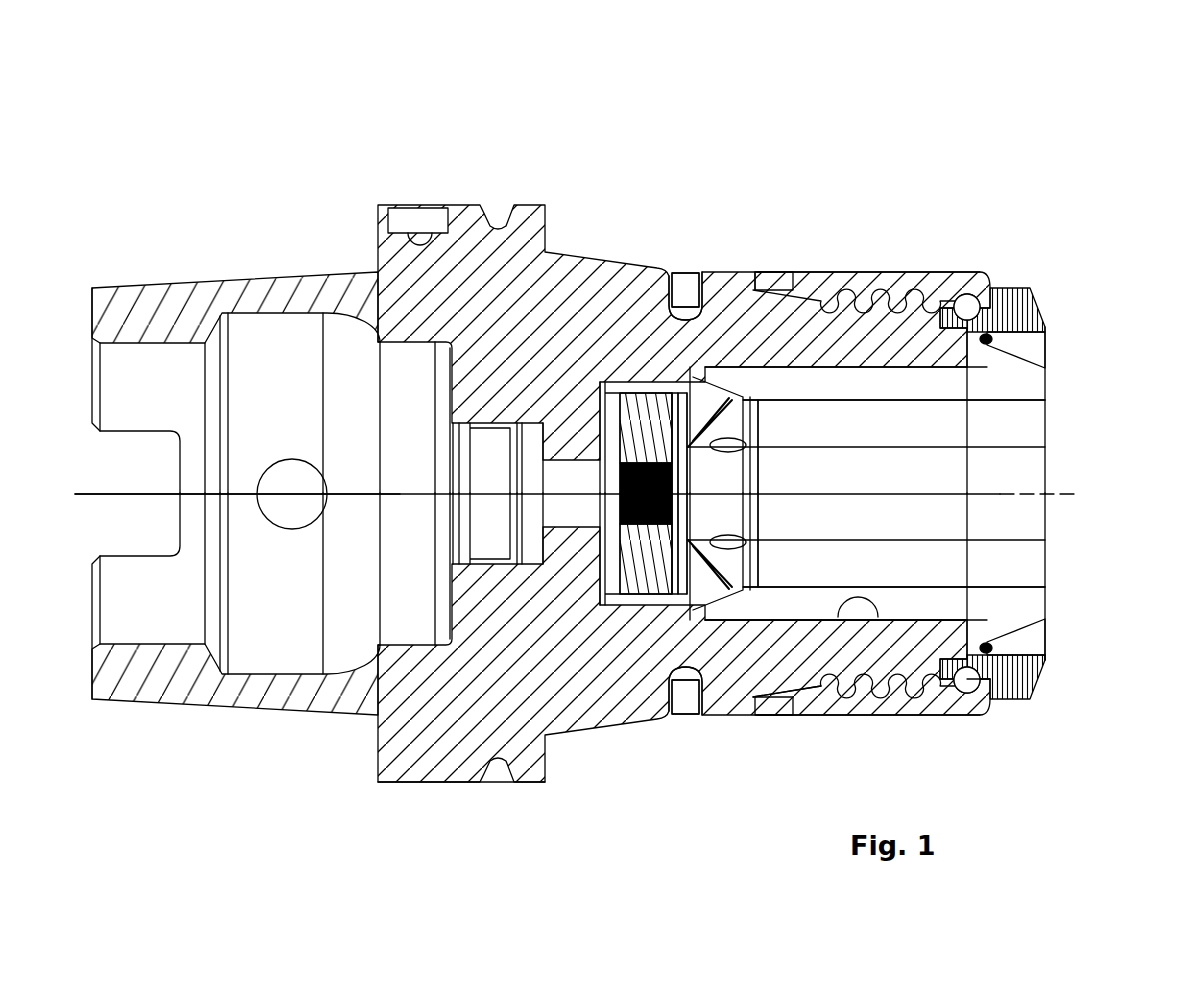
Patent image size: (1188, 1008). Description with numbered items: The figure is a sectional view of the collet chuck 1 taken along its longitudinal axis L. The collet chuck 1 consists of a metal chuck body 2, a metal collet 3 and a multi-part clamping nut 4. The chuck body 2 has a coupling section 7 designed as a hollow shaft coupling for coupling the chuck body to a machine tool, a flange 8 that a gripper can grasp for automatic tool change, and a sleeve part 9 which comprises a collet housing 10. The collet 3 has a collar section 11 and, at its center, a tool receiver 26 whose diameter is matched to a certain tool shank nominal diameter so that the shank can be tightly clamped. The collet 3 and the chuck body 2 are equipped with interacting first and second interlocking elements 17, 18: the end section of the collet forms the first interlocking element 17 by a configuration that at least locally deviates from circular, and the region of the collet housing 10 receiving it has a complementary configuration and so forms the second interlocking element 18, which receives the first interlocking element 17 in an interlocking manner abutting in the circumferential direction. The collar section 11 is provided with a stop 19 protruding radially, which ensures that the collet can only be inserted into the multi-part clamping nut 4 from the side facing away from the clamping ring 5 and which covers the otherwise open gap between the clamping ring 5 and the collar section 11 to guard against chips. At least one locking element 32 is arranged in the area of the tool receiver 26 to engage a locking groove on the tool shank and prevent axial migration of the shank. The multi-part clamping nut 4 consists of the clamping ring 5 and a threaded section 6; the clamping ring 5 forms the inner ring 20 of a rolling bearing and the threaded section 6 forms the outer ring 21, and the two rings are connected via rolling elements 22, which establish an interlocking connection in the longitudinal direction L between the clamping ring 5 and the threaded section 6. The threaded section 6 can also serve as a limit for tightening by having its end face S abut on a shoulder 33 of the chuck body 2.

The collet chuck 1 is at (727, 223).
The chuck body 2 is at (558, 300).
The collet 3 is at (807, 385).
The multi-part clamping nut 4 is at (1007, 276).
The clamping ring 5 is at (1005, 318).
The threaded section 6 is at (870, 272).
The coupling section 7 is at (197, 303).
The flange 8 is at (478, 780).
The sleeve part 9 is at (700, 665).
The collet housing 10 is at (857, 620).
The collar section 11 is at (1030, 353).
The first interlocking element 17 is at (655, 598).
The second interlocking element 18 is at (642, 600).
The stop 19 is at (1040, 688).
The inner ring 20 is at (993, 700).
The outer ring 21 is at (960, 705).
The rolling elements 22 is at (970, 694).
The tool receiver 26 is at (927, 400).
The locking element 32 is at (690, 270).
The shoulder 33 is at (728, 272).
The end face S is at (768, 270).
The longitudinal axis L is at (80, 494).